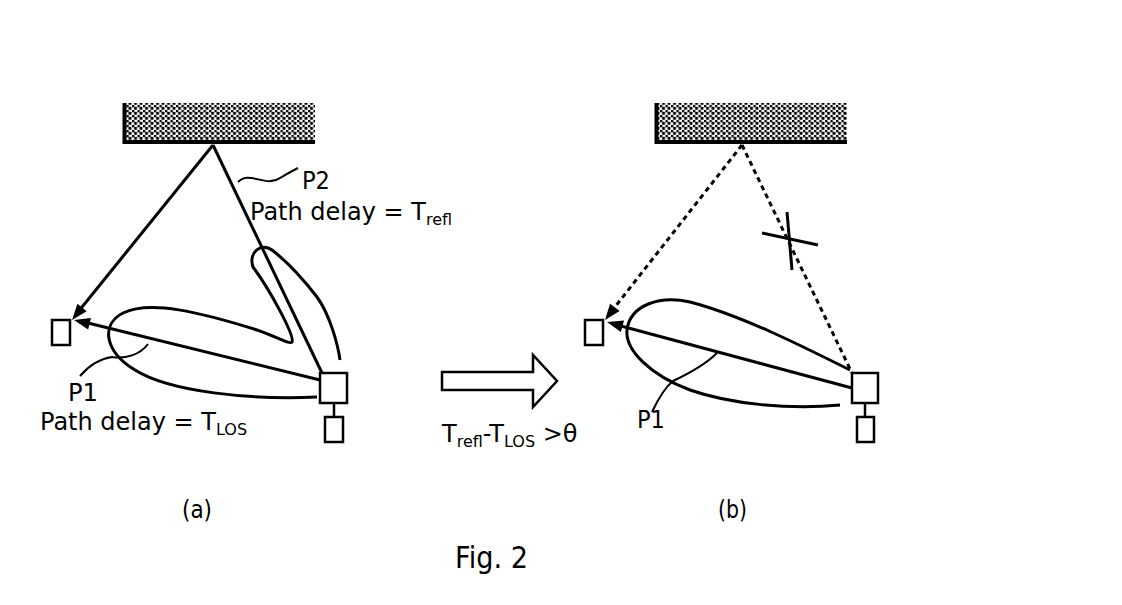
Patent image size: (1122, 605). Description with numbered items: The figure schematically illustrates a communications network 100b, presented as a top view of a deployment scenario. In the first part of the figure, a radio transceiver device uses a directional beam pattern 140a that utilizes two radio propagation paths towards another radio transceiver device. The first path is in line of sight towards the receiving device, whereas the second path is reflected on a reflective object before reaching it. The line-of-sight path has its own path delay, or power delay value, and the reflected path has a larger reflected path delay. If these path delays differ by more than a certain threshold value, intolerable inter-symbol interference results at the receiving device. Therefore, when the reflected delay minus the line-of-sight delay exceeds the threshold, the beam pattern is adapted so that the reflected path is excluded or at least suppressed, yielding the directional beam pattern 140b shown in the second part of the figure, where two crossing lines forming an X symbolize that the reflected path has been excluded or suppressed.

The communications network 100b is at (424, 47).
The directional beam pattern 140a is at (305, 288).
The directional beam pattern 140b is at (738, 408).